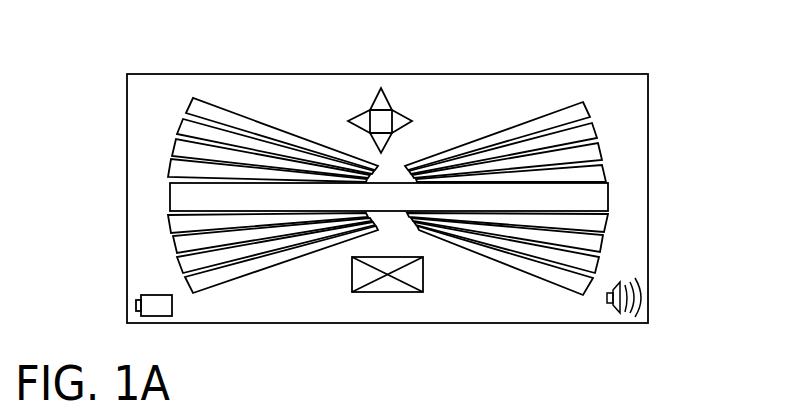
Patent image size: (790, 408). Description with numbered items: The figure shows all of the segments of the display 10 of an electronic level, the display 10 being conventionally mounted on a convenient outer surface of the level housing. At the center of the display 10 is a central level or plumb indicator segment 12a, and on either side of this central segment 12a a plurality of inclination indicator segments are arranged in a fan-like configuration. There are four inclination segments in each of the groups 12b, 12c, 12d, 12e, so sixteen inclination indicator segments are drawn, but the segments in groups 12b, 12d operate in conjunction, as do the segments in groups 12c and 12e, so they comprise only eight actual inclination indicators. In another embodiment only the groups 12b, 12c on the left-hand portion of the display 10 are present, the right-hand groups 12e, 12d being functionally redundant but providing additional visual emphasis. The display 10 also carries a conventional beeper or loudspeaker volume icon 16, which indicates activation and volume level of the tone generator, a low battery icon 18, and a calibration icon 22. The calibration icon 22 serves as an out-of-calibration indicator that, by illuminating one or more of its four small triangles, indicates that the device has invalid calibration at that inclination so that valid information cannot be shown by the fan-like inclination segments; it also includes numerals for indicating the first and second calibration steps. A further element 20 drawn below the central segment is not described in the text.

The display 10 is at (567, 74).
The central level indicator segment 12a is at (607, 200).
The inclination indicator segment group 12b is at (170, 168).
The inclination indicator segment group 12c is at (189, 285).
The inclination indicator segment group 12d is at (588, 286).
The inclination indicator segment group 12e is at (604, 172).
The loudspeaker volume icon 16 is at (618, 307).
The low battery icon 18 is at (153, 317).
The bowtie element 20 is at (395, 292).
The calibration icon 22 is at (383, 88).